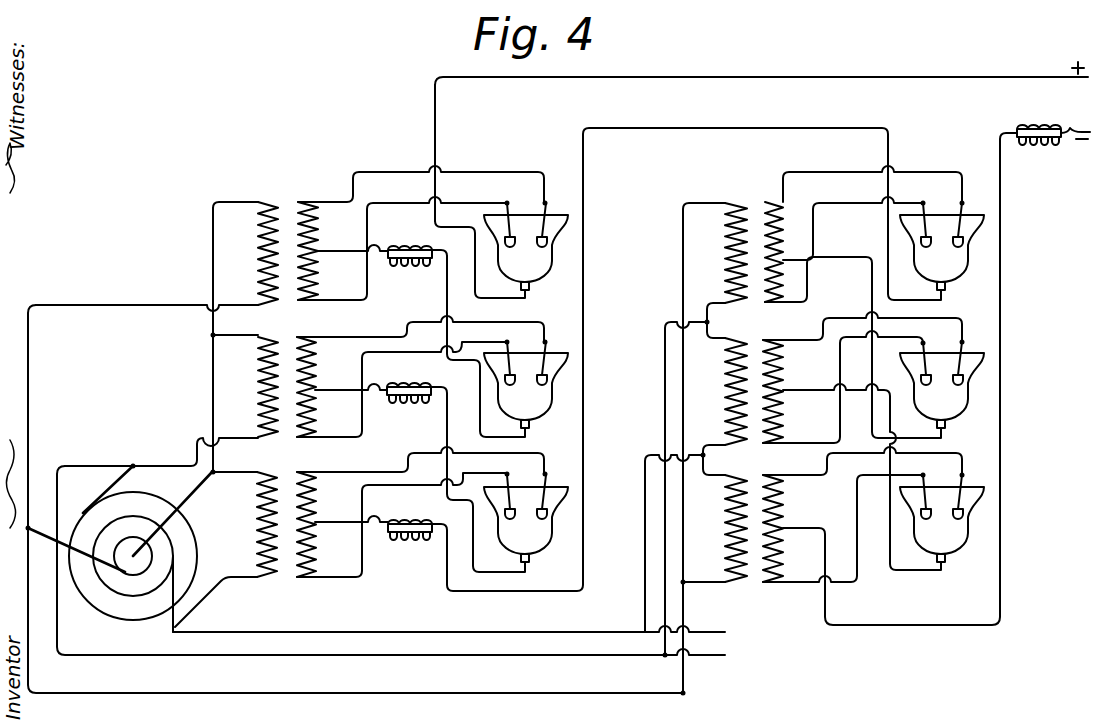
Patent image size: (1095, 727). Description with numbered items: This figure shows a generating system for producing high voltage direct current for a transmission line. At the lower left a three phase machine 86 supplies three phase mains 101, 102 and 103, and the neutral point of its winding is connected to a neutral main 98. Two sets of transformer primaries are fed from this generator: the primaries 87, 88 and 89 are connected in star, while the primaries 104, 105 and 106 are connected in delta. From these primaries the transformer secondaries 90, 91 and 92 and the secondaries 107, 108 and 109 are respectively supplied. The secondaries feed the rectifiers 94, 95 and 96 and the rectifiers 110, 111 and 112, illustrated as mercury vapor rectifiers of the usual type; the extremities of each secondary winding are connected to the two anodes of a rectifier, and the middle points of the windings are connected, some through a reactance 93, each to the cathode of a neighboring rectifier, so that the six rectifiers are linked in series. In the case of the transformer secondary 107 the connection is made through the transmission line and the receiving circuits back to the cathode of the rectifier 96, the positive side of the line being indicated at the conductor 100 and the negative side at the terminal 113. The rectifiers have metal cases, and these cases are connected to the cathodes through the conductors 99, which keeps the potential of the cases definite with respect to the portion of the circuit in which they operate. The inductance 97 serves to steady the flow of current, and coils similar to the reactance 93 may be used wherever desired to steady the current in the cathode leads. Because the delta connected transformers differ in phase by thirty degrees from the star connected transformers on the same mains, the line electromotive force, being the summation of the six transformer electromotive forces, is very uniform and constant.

The three phase machine 86 is at (128, 580).
The transformer primary 87 is at (250, 524).
The transformer primary 88 is at (251, 387).
The transformer primary 89 is at (255, 253).
The transformer secondary 90 is at (322, 524).
The transformer secondary 91 is at (321, 387).
The transformer secondary 92 is at (322, 251).
The reactance coil 93 is at (409, 379).
The rectifier 94 is at (526, 517).
The rectifier 95 is at (526, 384).
The rectifier 96 is at (526, 246).
The inductance 97 is at (1039, 147).
The neutral main 98 is at (213, 378).
The conductor 99 is at (505, 297).
The positive supply conductor 100 is at (538, 79).
The three phase main 101 is at (407, 689).
The three phase main 102 is at (391, 562).
The three phase main 103 is at (497, 627).
The transformer primary 104 is at (716, 528).
The transformer primary 105 is at (716, 391).
The transformer primary 106 is at (716, 253).
The transformer secondary 107 is at (793, 528).
The transformer secondary 108 is at (794, 391).
The transformer secondary 109 is at (792, 252).
The rectifier 110 is at (942, 518).
The rectifier 111 is at (942, 384).
The rectifier 112 is at (942, 246).
The negative terminal 113 is at (1080, 128).